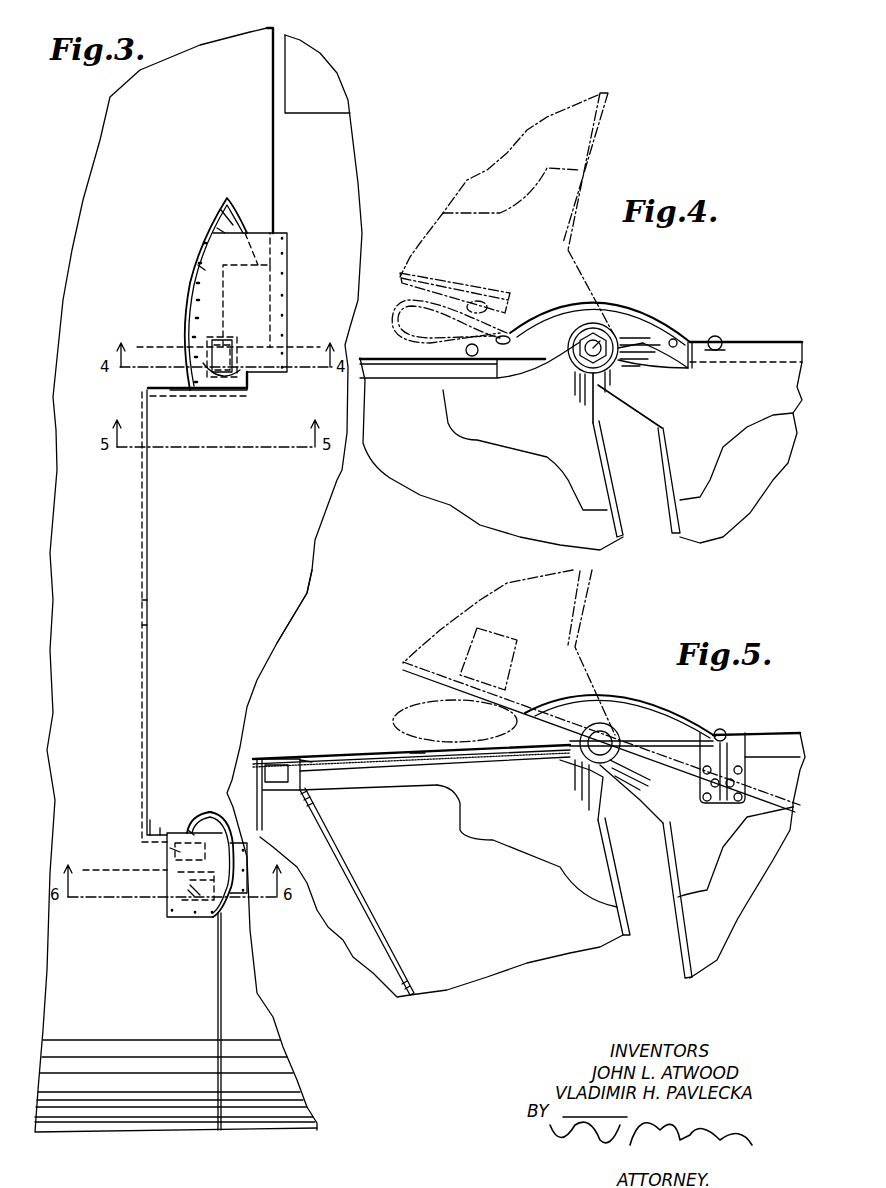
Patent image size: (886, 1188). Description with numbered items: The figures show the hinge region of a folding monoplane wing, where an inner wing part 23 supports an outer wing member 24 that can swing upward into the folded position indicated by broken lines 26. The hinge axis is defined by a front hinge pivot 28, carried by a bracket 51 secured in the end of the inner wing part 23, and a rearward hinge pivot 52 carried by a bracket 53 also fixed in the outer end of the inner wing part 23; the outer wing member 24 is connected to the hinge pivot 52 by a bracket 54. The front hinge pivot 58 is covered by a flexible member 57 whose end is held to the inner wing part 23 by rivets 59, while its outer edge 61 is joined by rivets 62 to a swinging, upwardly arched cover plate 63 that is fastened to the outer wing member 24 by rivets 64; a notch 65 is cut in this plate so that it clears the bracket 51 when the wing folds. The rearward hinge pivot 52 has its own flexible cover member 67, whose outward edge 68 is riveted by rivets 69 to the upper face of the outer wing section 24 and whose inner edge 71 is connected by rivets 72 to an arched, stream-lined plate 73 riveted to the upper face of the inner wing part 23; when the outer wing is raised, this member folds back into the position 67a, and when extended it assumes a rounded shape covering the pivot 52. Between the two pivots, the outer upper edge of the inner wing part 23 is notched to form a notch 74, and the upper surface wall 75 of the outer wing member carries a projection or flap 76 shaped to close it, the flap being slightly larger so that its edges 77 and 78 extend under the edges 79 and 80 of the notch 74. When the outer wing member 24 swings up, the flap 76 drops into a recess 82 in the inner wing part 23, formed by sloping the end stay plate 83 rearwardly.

In FIG. 3, the inner wing part 23 is at (90, 213).
In FIG. 4, the inner wing part 23 is at (393, 358).
In FIG. 5, the inner wing part 23 is at (342, 790).
In FIG. 3, the outer wing member 24 is at (342, 175).
In FIG. 4, the outer wing member 24 is at (760, 340).
In FIG. 5, the outer wing member 24 is at (760, 733).
In FIG. 4, the folded position broken lines 26 is at (593, 127).
In FIG. 5, the folded position broken lines 26 is at (601, 691).
In FIG. 3, the hinge pivot 28 is at (192, 917).
In FIG. 3, the bracket 51 is at (190, 890).
In FIG. 3, the hinge pivot 52 is at (207, 337).
In FIG. 4, the hinge pivot 52 is at (613, 340).
In FIG. 5, the hinge pivot 52 is at (605, 770).
In FIG. 4, the bracket 53 is at (483, 427).
In FIG. 5, the bracket 53 is at (513, 820).
In FIG. 4, the bracket 54 is at (677, 340).
In FIG. 5, the bracket 54 is at (657, 793).
In FIG. 3, the flexible cover member 57 is at (190, 893).
In FIG. 3, the front hinge pivot 58 is at (178, 900).
In FIG. 3, the rivets 59 is at (170, 850).
In FIG. 3, the outer edge 61 is at (250, 840).
In FIG. 3, the rivets 62 is at (247, 903).
In FIG. 3, the swinging cover plate 63 is at (210, 812).
In FIG. 3, the rivets 64 is at (228, 825).
In FIG. 3, the notch 65 is at (190, 833).
In FIG. 3, the flexible cover member 67 is at (233, 247).
In FIG. 4, the flexible cover member 67 is at (617, 307).
In FIG. 5, the flexible cover member 67 is at (637, 710).
In FIG. 4, the folded position of flexible member 67a is at (397, 317).
In FIG. 5, the folded position of flexible member 67a is at (413, 710).
In FIG. 3, the outward edge 68 is at (288, 263).
In FIG. 4, the outward edge 68 is at (700, 340).
In FIG. 3, the rivets 69 is at (285, 293).
In FIG. 4, the rivets 69 is at (715, 353).
In FIG. 3, the inner edge 71 is at (217, 228).
In FIG. 3, the rivets 72 is at (200, 265).
In FIG. 3, the arched stream-lined plate 73 is at (225, 213).
In FIG. 3, the notch 74 is at (152, 385).
In FIG. 5, the notch 74 is at (367, 757).
In FIG. 3, the upper surface wall 75 is at (295, 555).
In FIG. 3, the projection or flap 76 is at (170, 568).
In FIG. 5, the projection or flap 76 is at (417, 760).
In FIG. 3, the edge 77 is at (140, 612).
In FIG. 5, the edge 77 is at (318, 765).
In FIG. 3, the edge 78 is at (150, 825).
In FIG. 3, the edge 79 is at (148, 660).
In FIG. 5, the edge 79 is at (327, 763).
In FIG. 3, the edge 80 is at (160, 830).
In FIG. 5, the recess 82 is at (458, 902).
In FIG. 5, the end stay plate 83 is at (398, 1000).